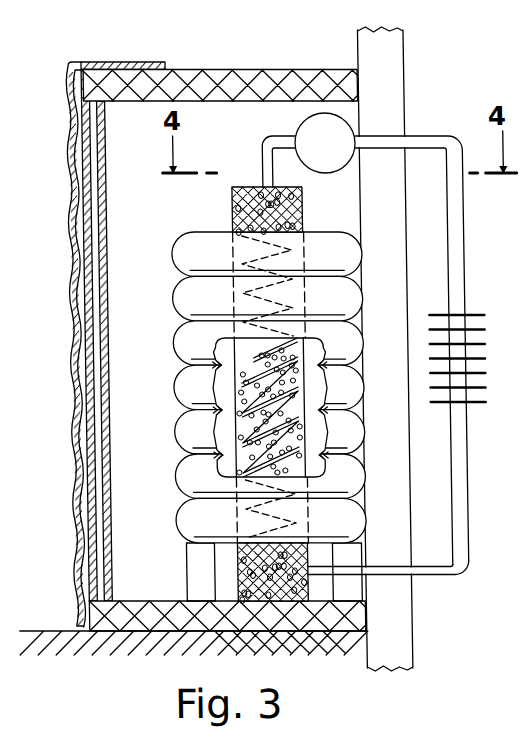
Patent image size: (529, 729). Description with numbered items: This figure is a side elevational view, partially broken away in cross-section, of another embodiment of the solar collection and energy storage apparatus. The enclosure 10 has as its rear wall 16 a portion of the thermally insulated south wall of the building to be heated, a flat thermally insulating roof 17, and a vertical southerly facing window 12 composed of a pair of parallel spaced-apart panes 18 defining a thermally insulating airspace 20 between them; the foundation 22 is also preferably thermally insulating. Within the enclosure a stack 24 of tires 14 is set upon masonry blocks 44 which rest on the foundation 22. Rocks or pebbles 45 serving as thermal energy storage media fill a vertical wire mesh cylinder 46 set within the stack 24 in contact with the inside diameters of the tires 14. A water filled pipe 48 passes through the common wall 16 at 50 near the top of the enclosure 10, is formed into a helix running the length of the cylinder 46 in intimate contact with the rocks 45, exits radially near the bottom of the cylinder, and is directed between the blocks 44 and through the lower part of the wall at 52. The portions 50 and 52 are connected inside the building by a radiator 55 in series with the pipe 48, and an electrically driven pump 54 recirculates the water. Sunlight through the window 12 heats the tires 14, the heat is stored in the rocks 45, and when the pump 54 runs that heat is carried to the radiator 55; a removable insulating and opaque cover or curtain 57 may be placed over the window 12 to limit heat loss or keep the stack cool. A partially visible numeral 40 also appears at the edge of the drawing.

The enclosure 10 is at (167, 52).
The window 12 is at (76, 394).
The tires 14 is at (190, 347).
The rear wall 16 is at (387, 75).
The roof 17 is at (229, 83).
The panes 18 is at (101, 365).
The airspace 20 is at (93, 500).
The foundation 22 is at (127, 623).
The stack 24 is at (182, 224).
The heat exchanger 40 is at (521, 330).
The masonry blocks 44 is at (193, 568).
The rocks or pebbles 45 is at (233, 422).
The cylinder 46 is at (229, 196).
The water filled pipe 48 is at (260, 167).
The pipe portion through wall 50 is at (380, 137).
The pipe portion through wall 52 is at (374, 568).
The pump 54 is at (307, 119).
The radiator 55 is at (468, 315).
The cover or curtain 57 is at (68, 237).